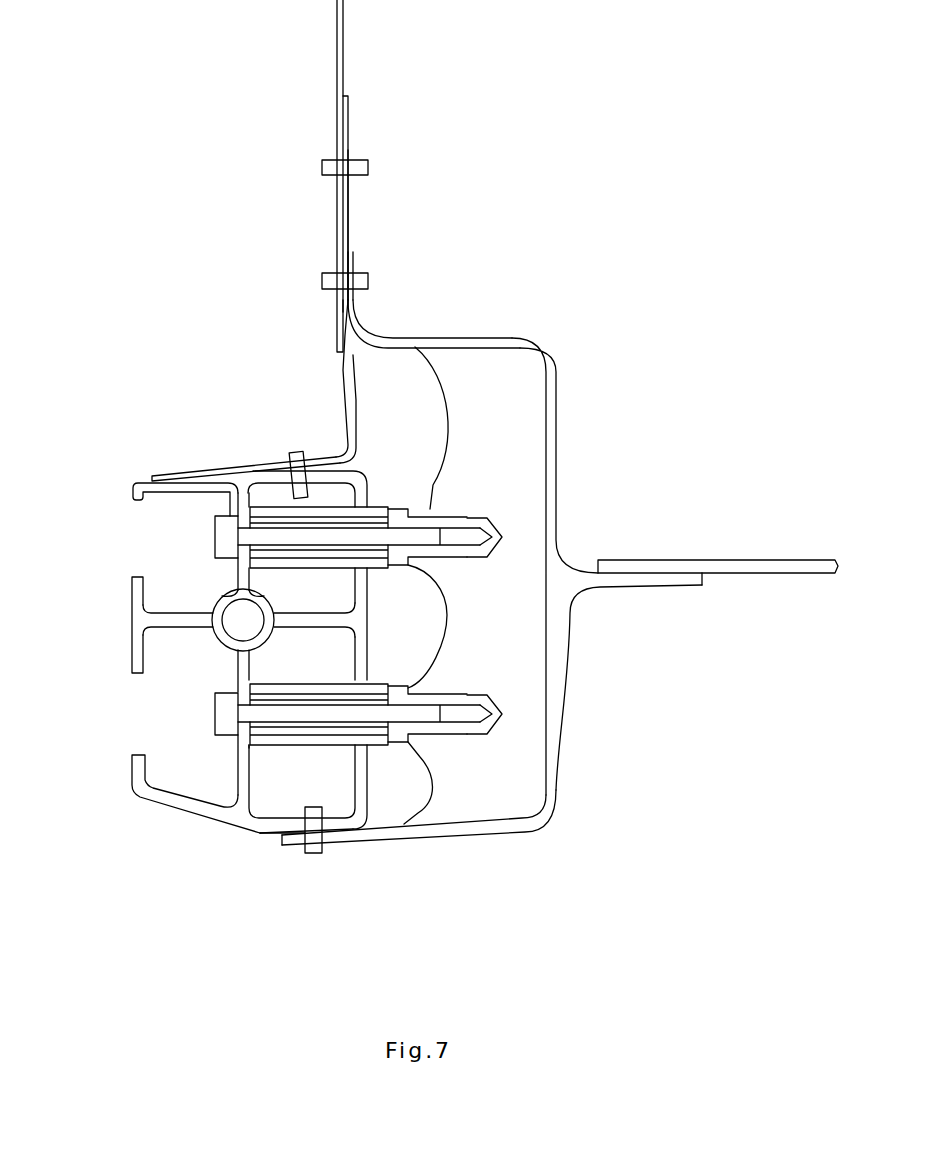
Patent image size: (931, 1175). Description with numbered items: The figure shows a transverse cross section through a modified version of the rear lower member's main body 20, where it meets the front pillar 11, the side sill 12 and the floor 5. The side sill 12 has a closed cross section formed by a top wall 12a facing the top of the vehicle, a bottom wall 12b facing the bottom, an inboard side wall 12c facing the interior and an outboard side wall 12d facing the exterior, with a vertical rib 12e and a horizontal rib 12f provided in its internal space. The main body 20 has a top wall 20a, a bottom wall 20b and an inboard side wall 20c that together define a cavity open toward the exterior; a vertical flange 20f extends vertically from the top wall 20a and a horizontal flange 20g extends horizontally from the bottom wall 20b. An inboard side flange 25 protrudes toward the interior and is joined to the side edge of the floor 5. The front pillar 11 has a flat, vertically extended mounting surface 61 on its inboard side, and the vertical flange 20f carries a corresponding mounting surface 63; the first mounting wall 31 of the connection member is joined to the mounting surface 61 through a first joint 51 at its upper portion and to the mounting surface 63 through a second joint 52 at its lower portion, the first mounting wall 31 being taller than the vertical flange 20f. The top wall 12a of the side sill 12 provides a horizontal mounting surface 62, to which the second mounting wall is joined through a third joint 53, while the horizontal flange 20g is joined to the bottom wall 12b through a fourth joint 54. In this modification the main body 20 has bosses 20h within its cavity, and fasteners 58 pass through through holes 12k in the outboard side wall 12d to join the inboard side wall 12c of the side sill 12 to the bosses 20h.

The floor 5 is at (778, 558).
The front pillar 11 is at (337, 57).
The side sill 12 is at (193, 684).
The top wall 12a is at (131, 487).
The bottom wall 12b is at (272, 838).
The inboard side wall 12c is at (355, 657).
The outboard side wall 12d is at (129, 660).
The vertical rib 12e is at (237, 668).
The horizontal rib 12f is at (184, 612).
The through hole 12k is at (134, 560).
The main body 20 is at (435, 579).
The top wall 20a is at (457, 338).
The bottom wall 20b is at (462, 832).
The inboard side wall 20c is at (569, 655).
The vertical flange 20f is at (356, 262).
The horizontal flange 20g is at (297, 852).
The boss 20h is at (438, 494).
The inboard side flange 25 is at (686, 588).
The first mounting wall 31 is at (348, 125).
The first joint 51 is at (322, 165).
The second joint 52 is at (322, 281).
The third joint 53 is at (298, 452).
The fourth joint 54 is at (318, 858).
The fastener 58 is at (215, 528).
The mounting surface 61 is at (348, 200).
The mounting surface 62 is at (200, 470).
The mounting surface 63 is at (343, 307).